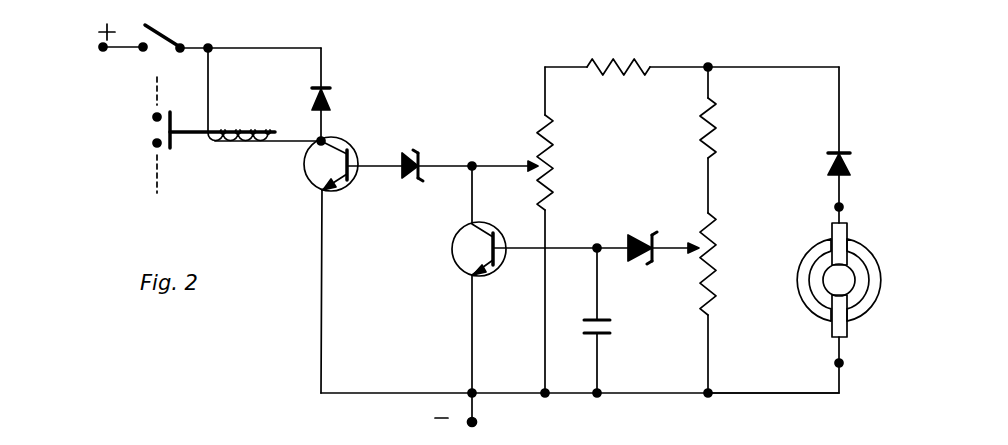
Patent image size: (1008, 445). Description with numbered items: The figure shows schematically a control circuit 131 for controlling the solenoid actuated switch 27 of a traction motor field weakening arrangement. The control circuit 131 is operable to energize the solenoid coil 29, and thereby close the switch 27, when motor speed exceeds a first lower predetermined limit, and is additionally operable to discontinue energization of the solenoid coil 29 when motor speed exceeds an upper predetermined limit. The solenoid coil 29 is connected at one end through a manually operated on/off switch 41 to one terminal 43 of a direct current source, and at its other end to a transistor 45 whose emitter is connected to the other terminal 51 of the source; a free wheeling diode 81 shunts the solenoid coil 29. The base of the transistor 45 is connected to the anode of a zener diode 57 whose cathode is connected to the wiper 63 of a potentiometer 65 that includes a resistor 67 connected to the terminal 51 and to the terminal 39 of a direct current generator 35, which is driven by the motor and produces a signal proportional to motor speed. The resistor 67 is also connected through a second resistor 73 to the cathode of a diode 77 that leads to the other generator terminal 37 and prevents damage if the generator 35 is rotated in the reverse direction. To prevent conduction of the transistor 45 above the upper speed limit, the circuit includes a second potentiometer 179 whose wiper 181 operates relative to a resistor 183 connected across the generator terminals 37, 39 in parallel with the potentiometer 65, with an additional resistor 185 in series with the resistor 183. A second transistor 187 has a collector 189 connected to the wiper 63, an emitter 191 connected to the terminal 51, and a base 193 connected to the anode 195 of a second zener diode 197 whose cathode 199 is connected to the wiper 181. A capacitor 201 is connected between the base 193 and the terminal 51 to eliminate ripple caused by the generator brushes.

The solenoid actuated switch 27 is at (128, 137).
The solenoid coil 29 is at (257, 100).
The direct current generator 35 is at (897, 235).
The generator terminal 37 is at (847, 206).
The generator terminal 39 is at (835, 363).
The manually operated on/off switch 41 is at (162, 35).
The source terminal 43 is at (97, 48).
The transistor 45 is at (290, 189).
The source terminal 51 is at (500, 413).
The zener diode 57 is at (407, 180).
The wiper 63 is at (532, 164).
The potentiometer 65 is at (567, 140).
The resistor 67 is at (553, 171).
The second resistor 73 is at (636, 78).
The diode 77 is at (848, 163).
The free wheeling diode 81 is at (333, 103).
The control circuit 131 is at (463, 92).
The second potentiometer 179 is at (717, 253).
The wiper 181 is at (703, 238).
The resistor 183 is at (715, 292).
The additional resistor 185 is at (717, 118).
The second transistor 187 is at (426, 261).
The collector 189 is at (463, 233).
The emitter 191 is at (463, 267).
The base 193 is at (520, 210).
The anode 195 is at (627, 242).
The second zener diode 197 is at (648, 208).
The cathode 199 is at (652, 264).
The capacitor 201 is at (611, 331).